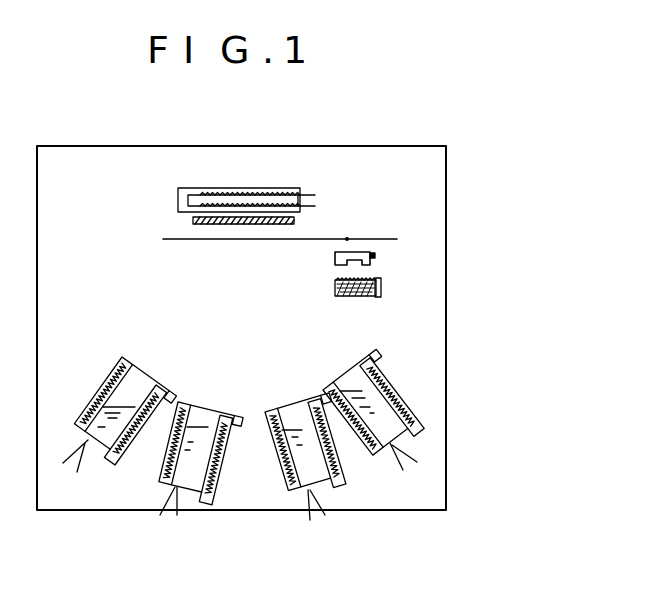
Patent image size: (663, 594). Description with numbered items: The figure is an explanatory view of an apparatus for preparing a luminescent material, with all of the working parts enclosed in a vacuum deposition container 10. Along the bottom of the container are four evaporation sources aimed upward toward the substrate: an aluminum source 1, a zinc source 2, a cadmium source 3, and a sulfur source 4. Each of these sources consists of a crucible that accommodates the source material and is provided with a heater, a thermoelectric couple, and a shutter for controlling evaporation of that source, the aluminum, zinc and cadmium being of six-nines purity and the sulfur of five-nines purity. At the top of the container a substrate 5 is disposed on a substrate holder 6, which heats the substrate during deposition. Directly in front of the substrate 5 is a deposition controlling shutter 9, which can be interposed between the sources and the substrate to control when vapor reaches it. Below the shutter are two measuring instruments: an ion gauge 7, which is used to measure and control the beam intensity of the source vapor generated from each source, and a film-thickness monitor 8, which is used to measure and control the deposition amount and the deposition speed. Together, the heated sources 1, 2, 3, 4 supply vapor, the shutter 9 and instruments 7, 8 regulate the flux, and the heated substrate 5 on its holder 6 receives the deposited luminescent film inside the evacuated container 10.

The aluminum source 1 is at (90, 462).
The zinc source 2 is at (188, 497).
The cadmium source 3 is at (331, 495).
The sulfur source 4 is at (415, 435).
The substrate 5 is at (294, 220).
The substrate holder 6 is at (312, 195).
The ion gauge 7 is at (381, 292).
The film-thickness monitor 8 is at (374, 258).
The deposition controlling shutter 9 is at (385, 233).
The vacuum deposition container 10 is at (446, 376).